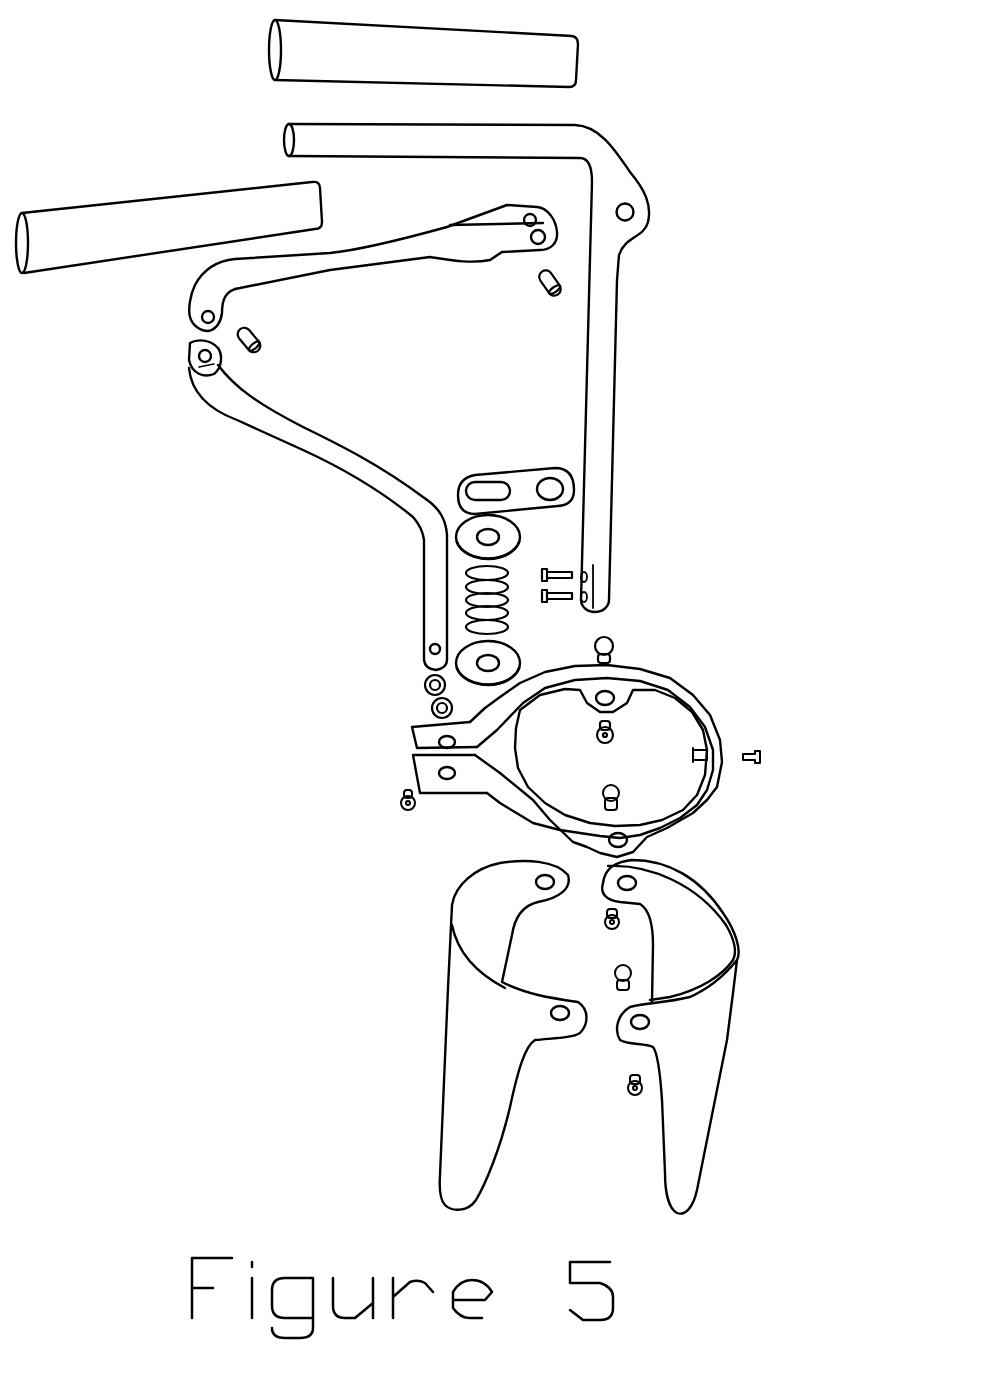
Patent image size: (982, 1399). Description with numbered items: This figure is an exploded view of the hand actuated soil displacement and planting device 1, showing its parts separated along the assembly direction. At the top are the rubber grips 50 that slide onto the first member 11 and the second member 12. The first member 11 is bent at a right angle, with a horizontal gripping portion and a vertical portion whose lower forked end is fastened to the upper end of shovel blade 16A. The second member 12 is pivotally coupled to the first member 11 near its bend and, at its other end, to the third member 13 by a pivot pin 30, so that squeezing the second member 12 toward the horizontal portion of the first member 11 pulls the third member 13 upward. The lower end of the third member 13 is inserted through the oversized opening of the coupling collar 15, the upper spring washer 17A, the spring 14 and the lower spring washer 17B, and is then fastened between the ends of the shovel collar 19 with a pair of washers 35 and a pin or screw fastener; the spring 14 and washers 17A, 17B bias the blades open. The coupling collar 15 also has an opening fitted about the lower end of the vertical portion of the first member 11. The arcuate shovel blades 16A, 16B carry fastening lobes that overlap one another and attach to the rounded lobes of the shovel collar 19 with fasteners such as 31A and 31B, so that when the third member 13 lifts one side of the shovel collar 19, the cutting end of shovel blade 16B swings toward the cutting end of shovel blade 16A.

The device 1 is at (130, 813).
The first member 11 is at (623, 183).
The second member 12 is at (338, 255).
The third member 13 is at (297, 437).
The spring 14 is at (468, 592).
The coupling collar 15 is at (570, 497).
The shovel blade 16A is at (477, 1067).
The shovel blade 16B is at (680, 1030).
The upper spring washer 17A is at (472, 540).
The lower spring washer 17B is at (463, 670).
The shovel collar 19 is at (500, 798).
The pivot pin 30 is at (553, 292).
The first fastener 31A is at (612, 643).
The second fastener 31B is at (613, 730).
The washers 35 is at (433, 717).
The rubber grips 50 is at (287, 62).